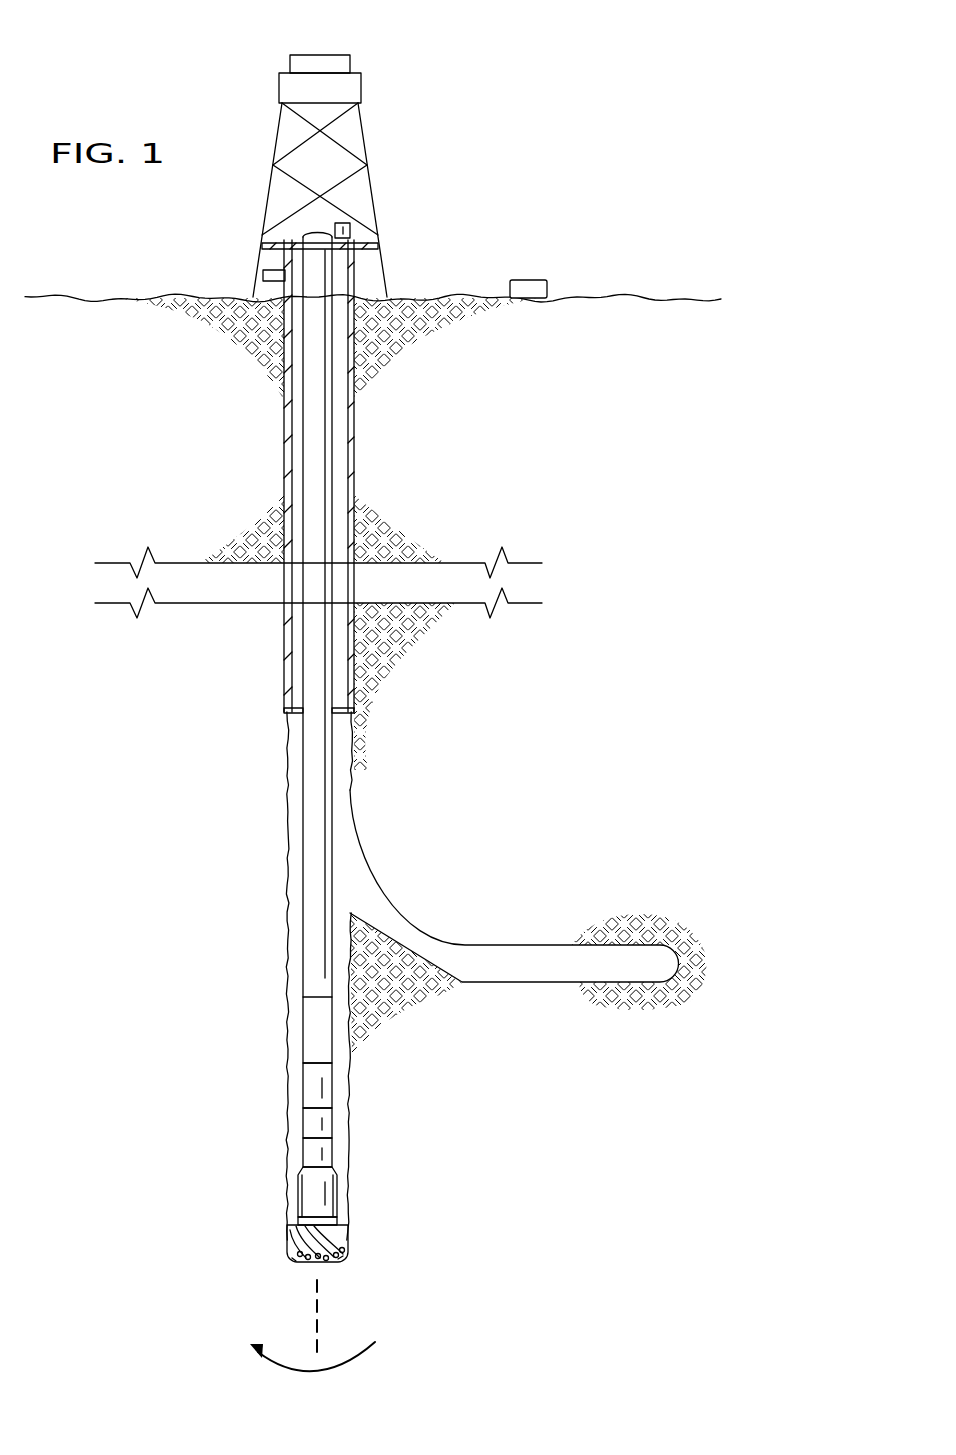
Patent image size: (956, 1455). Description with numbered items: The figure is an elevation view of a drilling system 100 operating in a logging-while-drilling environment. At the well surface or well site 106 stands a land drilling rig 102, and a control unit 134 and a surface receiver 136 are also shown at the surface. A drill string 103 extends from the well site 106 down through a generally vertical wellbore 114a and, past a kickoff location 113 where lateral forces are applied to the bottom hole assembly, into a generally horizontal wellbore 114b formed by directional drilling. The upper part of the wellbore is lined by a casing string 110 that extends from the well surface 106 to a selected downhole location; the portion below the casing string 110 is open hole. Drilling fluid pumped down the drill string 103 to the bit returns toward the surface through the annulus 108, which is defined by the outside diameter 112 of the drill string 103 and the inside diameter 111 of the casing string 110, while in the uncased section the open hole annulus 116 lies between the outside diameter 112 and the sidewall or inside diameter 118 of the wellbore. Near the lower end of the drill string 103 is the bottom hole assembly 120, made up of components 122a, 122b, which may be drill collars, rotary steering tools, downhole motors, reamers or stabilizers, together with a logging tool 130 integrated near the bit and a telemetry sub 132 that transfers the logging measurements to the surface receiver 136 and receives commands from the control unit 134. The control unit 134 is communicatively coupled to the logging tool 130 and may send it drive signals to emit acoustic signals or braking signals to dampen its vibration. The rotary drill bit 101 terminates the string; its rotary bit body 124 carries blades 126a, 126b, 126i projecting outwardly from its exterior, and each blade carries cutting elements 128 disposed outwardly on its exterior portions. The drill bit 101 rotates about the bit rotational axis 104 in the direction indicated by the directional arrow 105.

The drilling system 100 is at (535, 63).
The drilling rig 102 is at (202, 102).
The control unit 134 is at (352, 229).
The well surface or well site 106 is at (373, 270).
The surface receiver 136 is at (534, 279).
The drill string 103 is at (344, 414).
The annulus 108 is at (292, 428).
The casing string 110 is at (285, 470).
The inside diameter of casing string 111 is at (351, 488).
The outside diameter of drill string 112 is at (303, 648).
The generally vertical wellbore 114a is at (188, 688).
The open hole annulus 116 is at (290, 830).
The inside diameter (sidewall) of wellbore 118 is at (297, 898).
The kickoff location 113 is at (355, 820).
The generally horizontal wellbore 114b is at (506, 917).
The component of bottom hole assembly 122a is at (312, 1022).
The component of bottom hole assembly 122b is at (312, 1087).
The telemetry sub 132 is at (312, 1125).
The logging tool 130 is at (312, 1155).
The bottom hole assembly 120 is at (324, 1110).
The rotary bit body 124 is at (297, 1197).
The rotary drill bit 101 is at (266, 1270).
The blade 126b is at (290, 1232).
The blade 126a is at (285, 1248).
The blade 126i is at (345, 1235).
The bit rotational axis 104 is at (313, 1290).
The cutting elements 128 is at (341, 1262).
The directional arrow 105 is at (378, 1345).